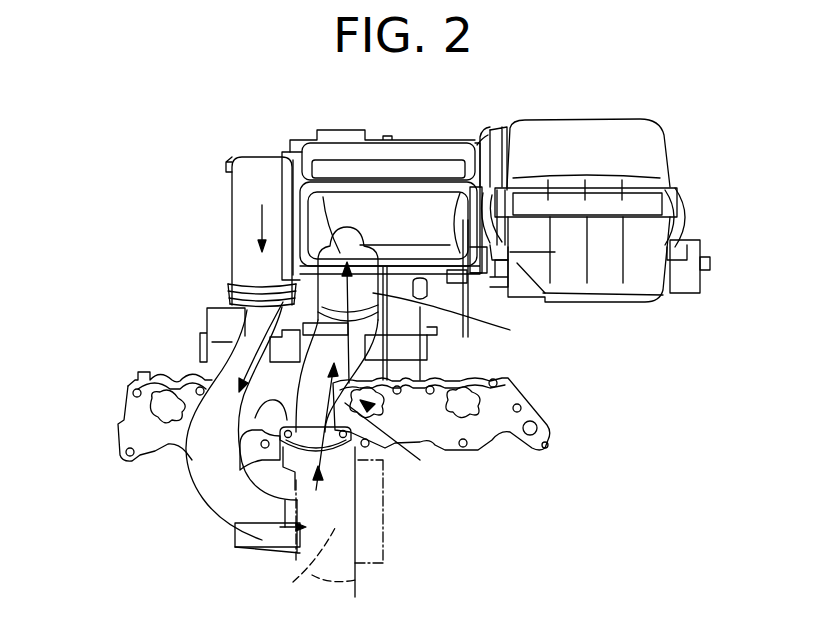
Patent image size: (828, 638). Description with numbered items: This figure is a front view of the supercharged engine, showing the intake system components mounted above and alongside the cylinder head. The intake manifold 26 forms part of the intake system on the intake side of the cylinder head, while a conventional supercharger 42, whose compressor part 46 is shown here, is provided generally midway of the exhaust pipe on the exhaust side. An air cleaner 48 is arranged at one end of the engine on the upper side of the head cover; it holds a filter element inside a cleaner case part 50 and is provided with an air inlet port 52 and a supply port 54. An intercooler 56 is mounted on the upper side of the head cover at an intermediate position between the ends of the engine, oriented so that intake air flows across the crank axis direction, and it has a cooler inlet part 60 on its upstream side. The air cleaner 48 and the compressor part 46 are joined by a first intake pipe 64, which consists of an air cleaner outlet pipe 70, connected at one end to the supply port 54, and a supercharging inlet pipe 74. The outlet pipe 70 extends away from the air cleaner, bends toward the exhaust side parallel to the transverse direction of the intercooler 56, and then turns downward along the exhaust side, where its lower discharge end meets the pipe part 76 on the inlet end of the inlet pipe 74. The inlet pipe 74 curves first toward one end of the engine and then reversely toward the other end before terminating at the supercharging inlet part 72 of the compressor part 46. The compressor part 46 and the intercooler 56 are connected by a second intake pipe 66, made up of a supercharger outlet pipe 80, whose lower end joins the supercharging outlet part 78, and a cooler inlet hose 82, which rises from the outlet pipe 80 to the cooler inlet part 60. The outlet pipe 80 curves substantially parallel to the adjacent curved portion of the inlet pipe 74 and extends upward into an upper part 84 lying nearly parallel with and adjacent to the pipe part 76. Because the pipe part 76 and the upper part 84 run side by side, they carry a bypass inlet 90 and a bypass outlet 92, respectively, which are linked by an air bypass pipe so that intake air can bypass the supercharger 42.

The intake manifold 26 is at (308, 393).
The supercharger 42 is at (392, 545).
The compressor part 46 is at (298, 570).
The air cleaner 48 is at (601, 211).
The cleaner case part 50 is at (657, 163).
The air inlet port 52 is at (680, 287).
The supply port 54 is at (505, 187).
The intercooler 56 is at (416, 128).
The cooler inlet part 60 is at (347, 225).
The first intake pipe 64 is at (302, 206).
The second intake pipe 66 is at (383, 407).
The air cleaner outlet pipe 70 is at (235, 183).
The supercharging inlet part 72 is at (293, 553).
The supercharging inlet pipe 74 is at (195, 455).
The pipe part 76 is at (247, 323).
The supercharging outlet part 78 is at (362, 485).
The supercharger outlet pipe 80 is at (378, 430).
The cooler inlet hose 82 is at (510, 330).
The upper part 84 is at (437, 387).
The bypass inlet 90 is at (216, 328).
The bypass outlet 92 is at (282, 340).